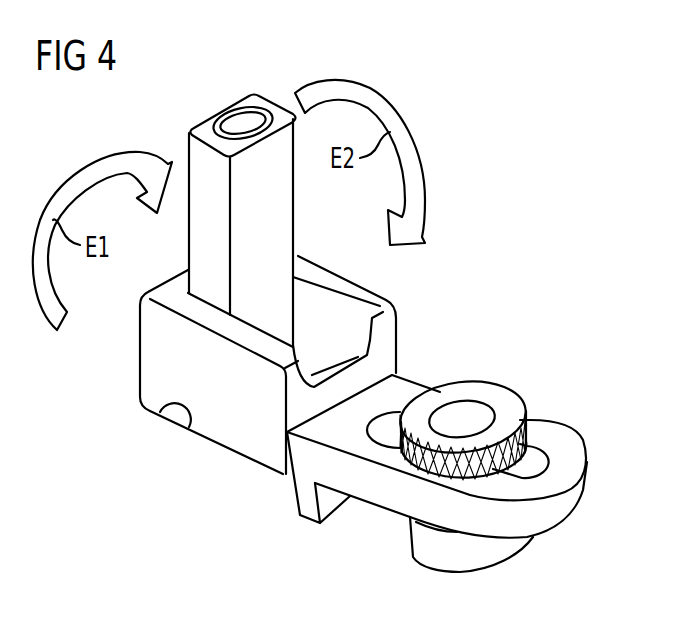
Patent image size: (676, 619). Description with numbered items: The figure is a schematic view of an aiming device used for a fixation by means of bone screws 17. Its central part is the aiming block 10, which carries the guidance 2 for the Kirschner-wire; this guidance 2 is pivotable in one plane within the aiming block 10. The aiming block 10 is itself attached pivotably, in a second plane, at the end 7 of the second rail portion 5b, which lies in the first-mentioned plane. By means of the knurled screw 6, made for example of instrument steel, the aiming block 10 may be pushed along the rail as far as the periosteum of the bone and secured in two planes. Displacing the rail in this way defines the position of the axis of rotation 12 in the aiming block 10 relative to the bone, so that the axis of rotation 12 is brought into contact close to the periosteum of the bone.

The guidance 2 is at (198, 237).
The second portion of the rail 5b is at (410, 390).
The knurled screw 6 is at (502, 397).
The end of the rail 7 is at (306, 495).
The aiming block 10 is at (218, 422).
The axis of rotation 12 is at (175, 418).
The bone screws 17 is at (420, 540).